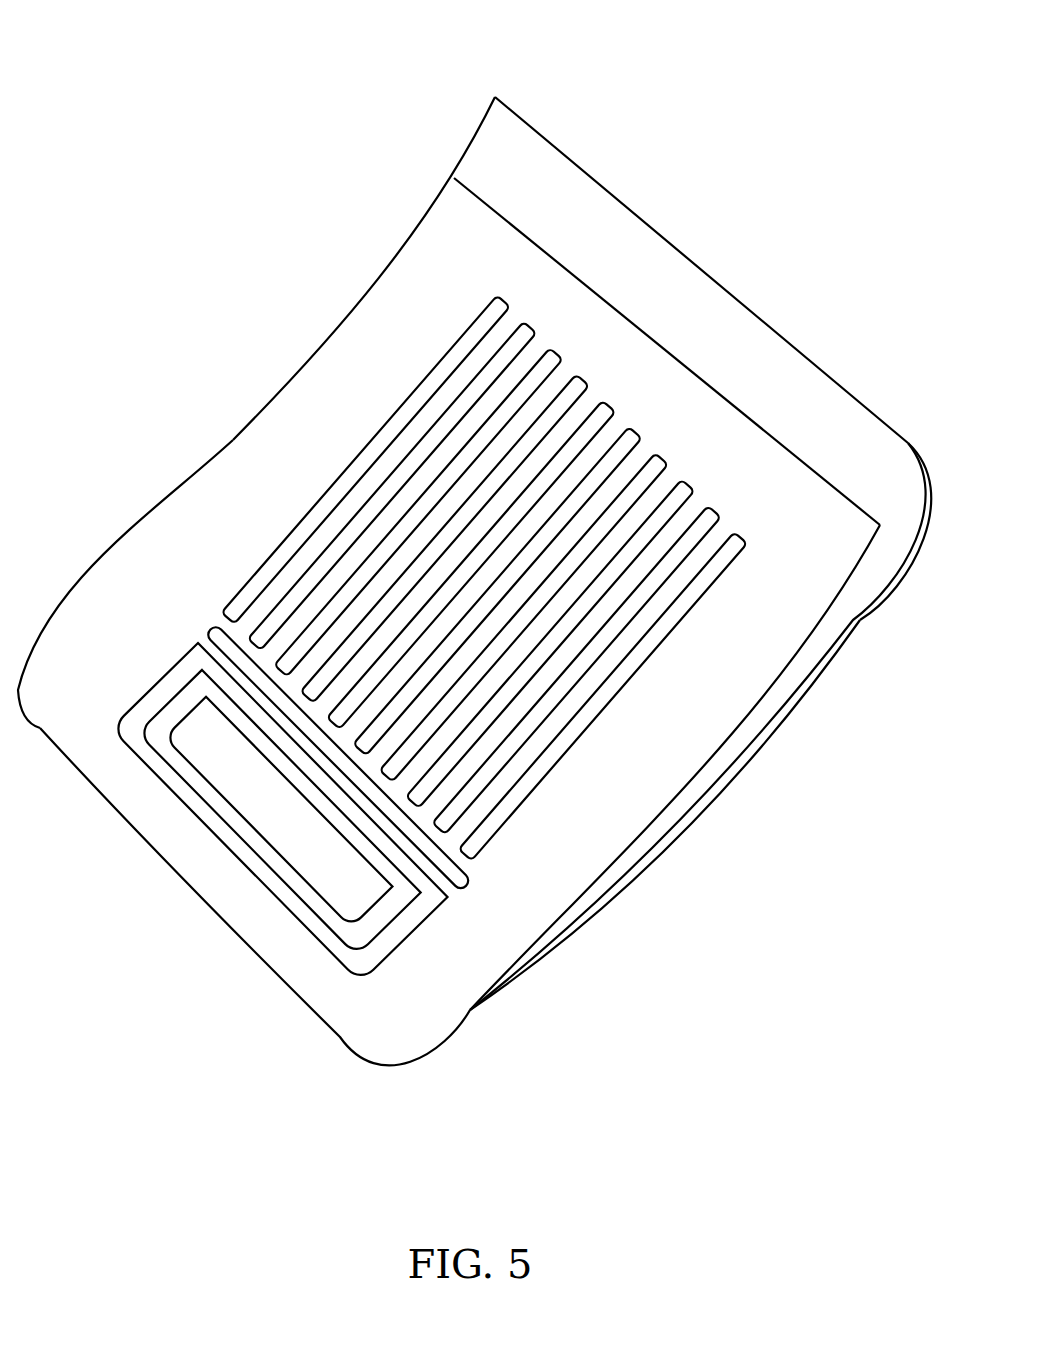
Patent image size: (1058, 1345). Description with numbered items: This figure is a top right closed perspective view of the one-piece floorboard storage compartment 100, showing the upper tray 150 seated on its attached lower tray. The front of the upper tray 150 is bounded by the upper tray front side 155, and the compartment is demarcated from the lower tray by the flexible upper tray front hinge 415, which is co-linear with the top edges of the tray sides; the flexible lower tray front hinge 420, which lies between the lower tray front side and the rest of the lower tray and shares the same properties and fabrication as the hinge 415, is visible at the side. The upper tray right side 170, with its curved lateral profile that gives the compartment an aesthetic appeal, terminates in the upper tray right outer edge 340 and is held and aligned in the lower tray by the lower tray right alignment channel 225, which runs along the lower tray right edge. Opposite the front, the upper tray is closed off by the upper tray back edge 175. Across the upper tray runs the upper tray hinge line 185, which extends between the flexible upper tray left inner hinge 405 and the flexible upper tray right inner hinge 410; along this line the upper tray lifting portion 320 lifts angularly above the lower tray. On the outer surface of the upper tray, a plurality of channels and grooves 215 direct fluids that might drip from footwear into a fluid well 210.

The one-piece floorboard storage compartment 100 is at (95, 48).
The upper tray 150 is at (440, 256).
The upper tray front side 155 is at (650, 303).
The upper tray right side 170 is at (810, 670).
The upper tray back edge 175 is at (258, 955).
The upper tray hinge line 185 is at (687, 362).
The fluid well 210 is at (291, 803).
The channels and grooves 215 is at (300, 535).
The lower tray right alignment channel 225 is at (783, 720).
The upper tray lifting portion 320 is at (465, 578).
The upper tray right outer edge 340 is at (743, 770).
The flexible upper tray left inner hinge 405 is at (371, 294).
The flexible upper tray right inner hinge 410 is at (685, 785).
The flexible upper tray front hinge 415 is at (607, 190).
The flexible lower tray front hinge 420 is at (910, 563).